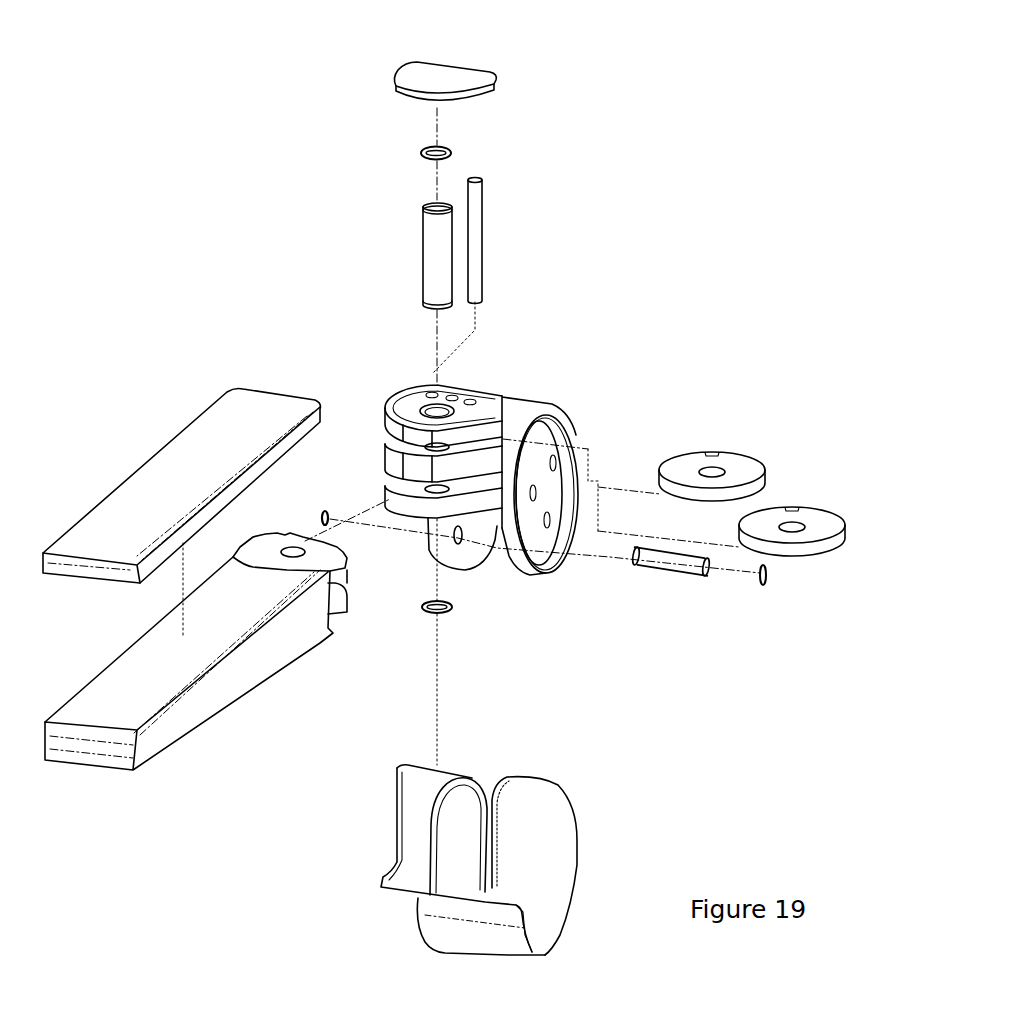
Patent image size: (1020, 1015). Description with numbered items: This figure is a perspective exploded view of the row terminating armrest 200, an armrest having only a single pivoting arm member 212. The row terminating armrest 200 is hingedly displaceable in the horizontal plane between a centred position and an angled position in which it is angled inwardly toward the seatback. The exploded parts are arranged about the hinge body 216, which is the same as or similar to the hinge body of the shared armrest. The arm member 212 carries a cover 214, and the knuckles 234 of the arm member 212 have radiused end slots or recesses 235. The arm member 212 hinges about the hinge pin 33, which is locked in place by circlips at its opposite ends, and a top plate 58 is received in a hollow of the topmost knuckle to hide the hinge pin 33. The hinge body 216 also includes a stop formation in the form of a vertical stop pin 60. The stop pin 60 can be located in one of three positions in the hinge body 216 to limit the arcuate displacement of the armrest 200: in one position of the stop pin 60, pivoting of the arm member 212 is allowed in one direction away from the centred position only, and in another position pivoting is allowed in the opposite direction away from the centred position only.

The row terminating armrest 200 is at (157, 202).
The top plate 58 is at (458, 74).
The hinge pin 33 is at (431, 248).
The vertical stop pin 60 is at (481, 256).
The hinge body 216 is at (540, 397).
The cover 214 is at (187, 440).
The radiused end slots or recesses 235 is at (311, 517).
The knuckles 234 is at (350, 602).
The pivoting arm member 212 is at (250, 663).